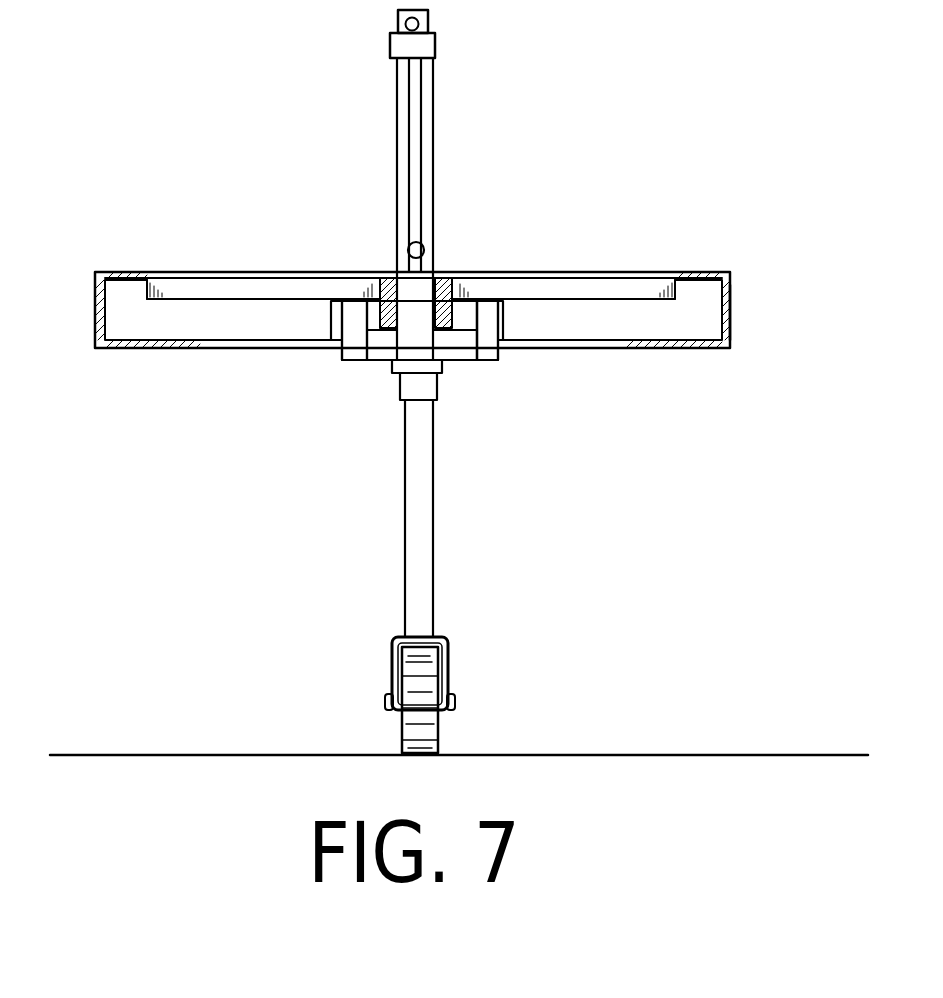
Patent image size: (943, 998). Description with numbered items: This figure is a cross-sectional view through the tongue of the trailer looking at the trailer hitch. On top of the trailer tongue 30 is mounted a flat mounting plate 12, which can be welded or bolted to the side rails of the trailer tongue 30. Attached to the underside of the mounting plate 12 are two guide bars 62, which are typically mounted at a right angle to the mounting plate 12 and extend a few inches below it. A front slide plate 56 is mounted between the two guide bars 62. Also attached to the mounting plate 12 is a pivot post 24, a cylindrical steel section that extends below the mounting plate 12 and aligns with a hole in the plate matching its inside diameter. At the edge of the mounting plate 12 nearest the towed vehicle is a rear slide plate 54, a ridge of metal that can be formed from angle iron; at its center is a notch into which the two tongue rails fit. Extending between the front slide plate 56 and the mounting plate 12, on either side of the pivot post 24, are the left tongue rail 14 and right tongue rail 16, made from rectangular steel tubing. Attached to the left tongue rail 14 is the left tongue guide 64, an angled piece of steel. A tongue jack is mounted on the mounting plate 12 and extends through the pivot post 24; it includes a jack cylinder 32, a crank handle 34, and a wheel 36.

The mounting plate 12 is at (648, 273).
The left tongue rail 14 is at (385, 277).
The right tongue rail 16 is at (447, 278).
The pivot post 24 is at (417, 332).
The trailer tongue 30 is at (730, 320).
The jack cylinder 32 is at (431, 118).
The crank handle 34 is at (408, 245).
The wheel 36 is at (441, 727).
The rear slide plate 54 is at (188, 290).
The front slide plate 56 is at (455, 353).
The guide bars 62 is at (362, 328).
The left tongue guide 64 is at (477, 355).